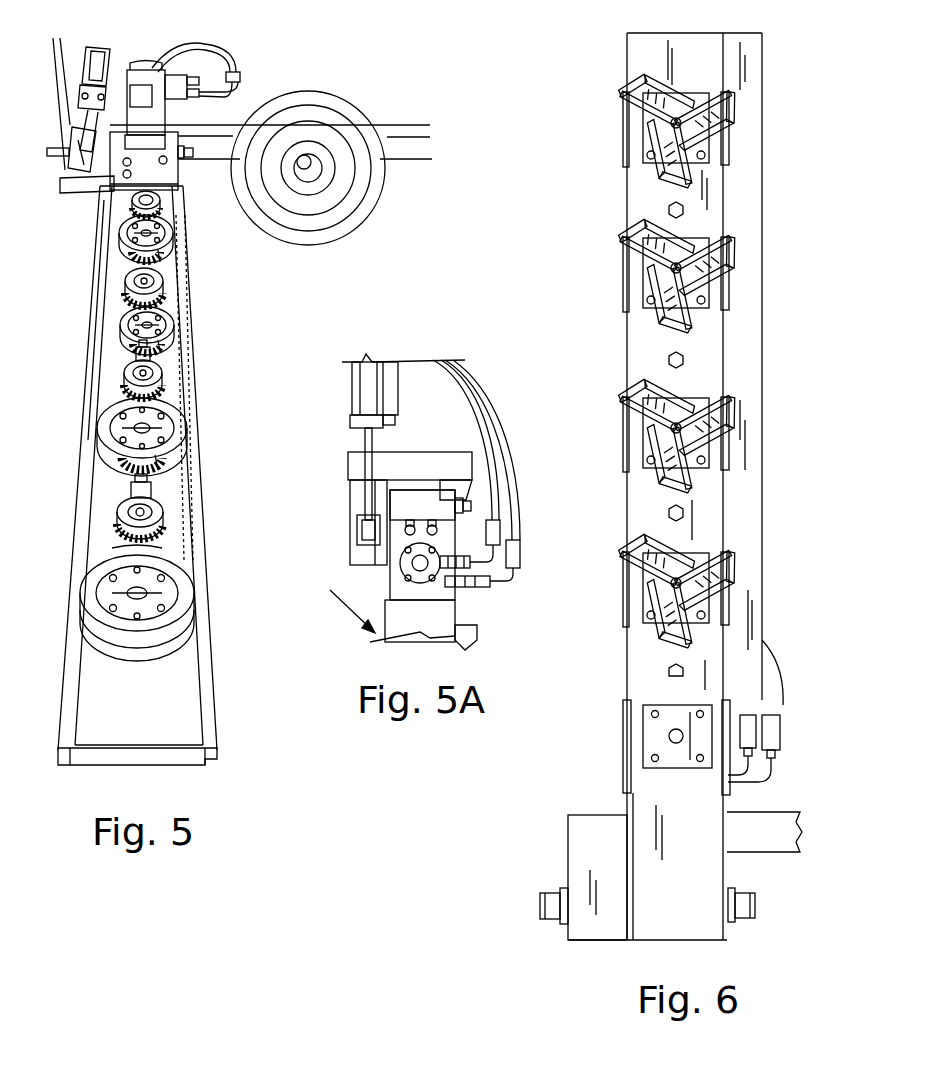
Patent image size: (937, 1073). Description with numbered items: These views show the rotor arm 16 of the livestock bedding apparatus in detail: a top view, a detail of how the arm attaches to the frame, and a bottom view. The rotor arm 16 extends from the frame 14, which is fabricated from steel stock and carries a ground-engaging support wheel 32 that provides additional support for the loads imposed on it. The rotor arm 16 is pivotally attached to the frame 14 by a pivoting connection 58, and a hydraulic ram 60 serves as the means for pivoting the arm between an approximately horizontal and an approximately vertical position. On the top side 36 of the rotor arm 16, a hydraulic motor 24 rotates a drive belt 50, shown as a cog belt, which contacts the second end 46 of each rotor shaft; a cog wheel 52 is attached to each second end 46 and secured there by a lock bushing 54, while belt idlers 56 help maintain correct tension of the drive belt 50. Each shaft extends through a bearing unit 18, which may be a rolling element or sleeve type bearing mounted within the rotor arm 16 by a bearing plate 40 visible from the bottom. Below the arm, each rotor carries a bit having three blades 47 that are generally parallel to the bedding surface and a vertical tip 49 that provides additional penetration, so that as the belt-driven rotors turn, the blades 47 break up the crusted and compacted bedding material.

In FIG. 5, the frame 14 is at (405, 125).
In FIG. 5A, the frame 14 is at (435, 458).
In FIG. 6, the frame 14 is at (775, 853).
In FIG. 5A, the rotor arm 16 is at (337, 603).
In FIG. 6, the bearing units 18 is at (672, 737).
In FIG. 5, the hydraulic motor 24 is at (150, 66).
In FIG. 5A, the hydraulic motor 24 is at (440, 582).
In FIG. 5, the ground-engaging support wheel 32 is at (318, 92).
In FIG. 5, the top side 36 is at (147, 716).
In FIG. 6, the bearing plate 40 is at (702, 714).
In FIG. 5, the second end 46 is at (134, 358).
In FIG. 6, the blades 47 is at (640, 82).
In FIG. 6, the vertical tip 49 is at (690, 130).
In FIG. 5, the drive belt 50 is at (110, 552).
In FIG. 5, the cog wheel 52 is at (130, 295).
In FIG. 5, the lock bushing 54 is at (165, 262).
In FIG. 5, the belt idlers 56 is at (175, 236).
In FIG. 5, the pivoting connection 58 is at (195, 153).
In FIG. 5A, the pivoting connection 58 is at (465, 507).
In FIG. 6, the pivoting connection 58 is at (755, 918).
In FIG. 5, the hydraulic ram 60 is at (97, 47).
In FIG. 5A, the hydraulic ram 60 is at (368, 378).